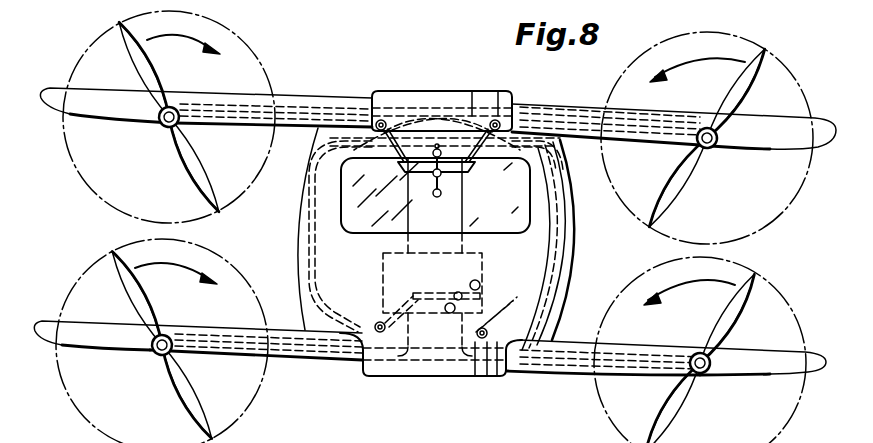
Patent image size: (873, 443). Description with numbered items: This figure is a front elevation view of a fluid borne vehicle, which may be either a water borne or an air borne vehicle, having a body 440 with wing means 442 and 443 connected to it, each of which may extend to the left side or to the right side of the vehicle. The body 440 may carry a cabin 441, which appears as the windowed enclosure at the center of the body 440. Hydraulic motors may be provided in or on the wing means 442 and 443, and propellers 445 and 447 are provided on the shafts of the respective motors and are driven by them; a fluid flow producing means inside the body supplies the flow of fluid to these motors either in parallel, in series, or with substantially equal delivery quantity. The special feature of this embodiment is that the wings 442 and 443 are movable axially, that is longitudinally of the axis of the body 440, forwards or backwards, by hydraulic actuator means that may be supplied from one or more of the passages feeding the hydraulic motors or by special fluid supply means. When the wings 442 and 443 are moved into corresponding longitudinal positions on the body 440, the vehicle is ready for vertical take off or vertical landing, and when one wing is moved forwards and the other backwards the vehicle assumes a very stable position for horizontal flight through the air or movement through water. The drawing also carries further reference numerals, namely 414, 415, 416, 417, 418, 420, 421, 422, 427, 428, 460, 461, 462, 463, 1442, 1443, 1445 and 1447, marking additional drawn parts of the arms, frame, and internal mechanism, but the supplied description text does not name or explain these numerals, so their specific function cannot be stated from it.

The support arm 414 is at (572, 372).
The support arm 415 is at (244, 127).
The support arm 416 is at (235, 106).
The pivot bracket 417 is at (380, 334).
The pivot bracket 418 is at (496, 108).
The arm member 420 is at (288, 362).
The arm member 421 is at (583, 112).
The arm member 422 is at (645, 140).
The rear cross frame 427 is at (470, 380).
The pivot bracket 428 is at (383, 108).
The body 440 is at (300, 237).
The cabin 441 is at (480, 212).
The wing means 442 is at (820, 122).
The wing means 443 is at (812, 348).
The propeller 445 is at (686, 404).
The propeller 447 is at (688, 178).
The control linkage 460 is at (480, 284).
The control unit 461 is at (434, 296).
The control stick 462 is at (437, 198).
The control bracket 463 is at (482, 165).
The arm tip 1442 is at (62, 92).
The arm tip 1443 is at (50, 322).
The rotor blade 1445 is at (135, 293).
The rotor blade 1447 is at (190, 157).